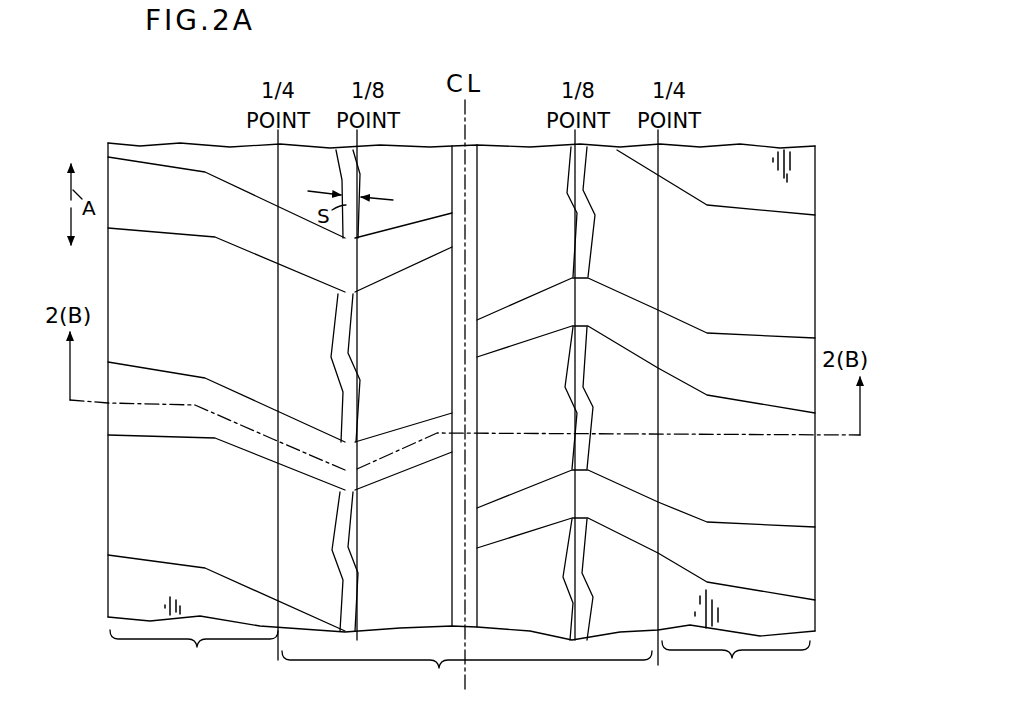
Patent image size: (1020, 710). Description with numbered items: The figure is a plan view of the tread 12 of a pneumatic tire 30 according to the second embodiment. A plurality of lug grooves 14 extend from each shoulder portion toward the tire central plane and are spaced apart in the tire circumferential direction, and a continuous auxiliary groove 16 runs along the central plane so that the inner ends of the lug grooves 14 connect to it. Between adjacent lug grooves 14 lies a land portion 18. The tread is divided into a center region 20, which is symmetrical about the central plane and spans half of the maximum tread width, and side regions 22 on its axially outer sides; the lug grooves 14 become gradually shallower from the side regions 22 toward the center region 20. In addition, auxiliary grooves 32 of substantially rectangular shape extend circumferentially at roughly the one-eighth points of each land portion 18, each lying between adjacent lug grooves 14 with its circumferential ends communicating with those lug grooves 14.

The tread 12 is at (717, 144).
The lug groove 14 is at (115, 418).
The auxiliary groove 16 is at (478, 272).
The land portion 18 is at (115, 480).
The center region 20 is at (467, 674).
The side region 22 is at (460, 660).
The pneumatic tire 30 is at (810, 121).
The auxiliary groove 32 is at (343, 312).